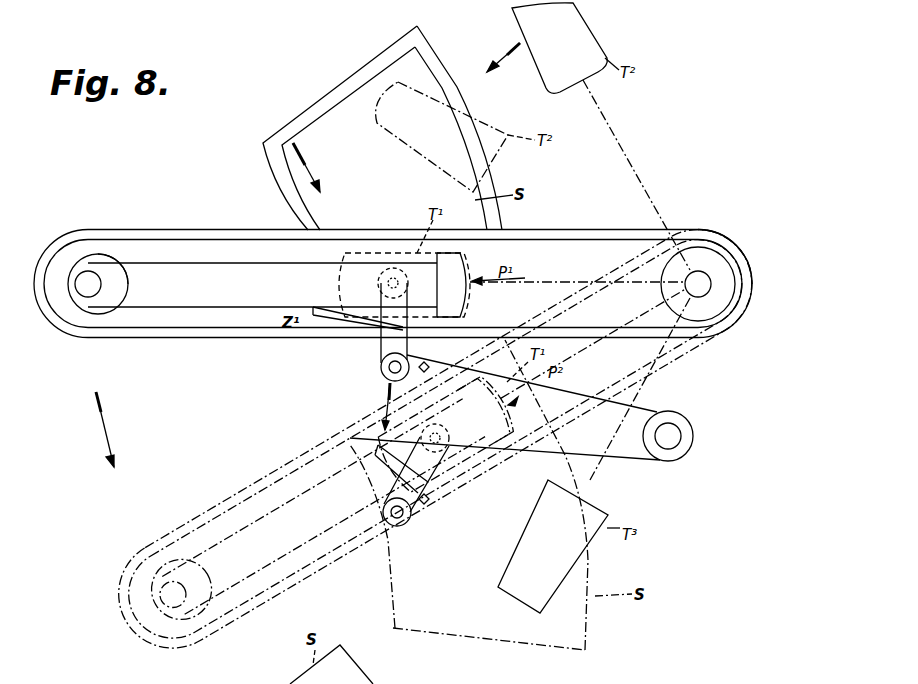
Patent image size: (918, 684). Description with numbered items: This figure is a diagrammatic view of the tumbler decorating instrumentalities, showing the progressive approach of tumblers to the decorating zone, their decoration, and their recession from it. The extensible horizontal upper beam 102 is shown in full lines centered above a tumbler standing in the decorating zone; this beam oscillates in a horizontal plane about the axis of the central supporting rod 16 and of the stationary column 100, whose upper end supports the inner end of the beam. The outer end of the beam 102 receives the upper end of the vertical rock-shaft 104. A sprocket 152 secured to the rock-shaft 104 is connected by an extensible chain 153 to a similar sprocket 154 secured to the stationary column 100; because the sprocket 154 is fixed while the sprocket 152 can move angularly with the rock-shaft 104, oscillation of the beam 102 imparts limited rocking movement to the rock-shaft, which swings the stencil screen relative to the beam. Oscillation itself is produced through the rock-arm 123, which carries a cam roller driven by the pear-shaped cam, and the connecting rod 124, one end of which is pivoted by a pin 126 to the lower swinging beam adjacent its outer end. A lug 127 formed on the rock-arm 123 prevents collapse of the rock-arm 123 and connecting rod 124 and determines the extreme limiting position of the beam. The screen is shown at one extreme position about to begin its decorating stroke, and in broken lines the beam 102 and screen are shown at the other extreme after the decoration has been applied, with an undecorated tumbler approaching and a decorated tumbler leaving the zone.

The central supporting rod 16 is at (716, 279).
The stationary column 100 is at (709, 272).
The extensible horizontal upper beam 102 is at (226, 298).
The vertical rock-shaft 104 is at (83, 288).
The rock-arm 123 is at (643, 407).
The connecting rod 124 is at (387, 343).
The pin 126 is at (387, 288).
The lug 127 is at (434, 357).
The sprocket 152 is at (95, 322).
The extensible chain 153 is at (278, 336).
The sprocket 154 is at (700, 244).